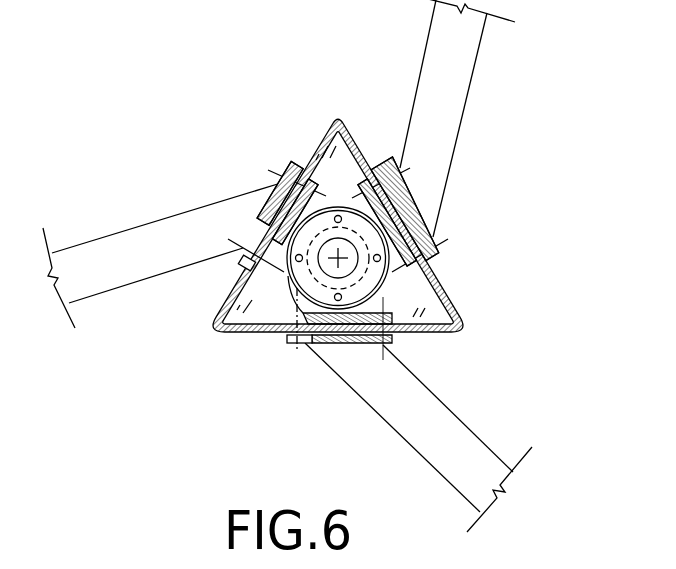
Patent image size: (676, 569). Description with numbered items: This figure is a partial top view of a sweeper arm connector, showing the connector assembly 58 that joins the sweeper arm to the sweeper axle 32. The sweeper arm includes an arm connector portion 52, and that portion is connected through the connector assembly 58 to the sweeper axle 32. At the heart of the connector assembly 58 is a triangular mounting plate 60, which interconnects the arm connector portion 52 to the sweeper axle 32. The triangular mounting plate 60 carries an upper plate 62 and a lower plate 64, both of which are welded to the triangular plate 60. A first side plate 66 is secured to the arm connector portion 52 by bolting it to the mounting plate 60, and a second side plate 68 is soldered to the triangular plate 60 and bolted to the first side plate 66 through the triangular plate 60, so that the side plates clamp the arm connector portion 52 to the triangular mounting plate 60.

The sweeper axle 32 is at (378, 272).
The arm connector portion 52 is at (415, 162).
The connector assembly 58 is at (475, 246).
The triangular mounting plate 60 is at (318, 150).
The upper plate 62 is at (247, 287).
The lower plate 64 is at (423, 297).
The first side plate 66 is at (420, 224).
The second side plate 68 is at (396, 195).